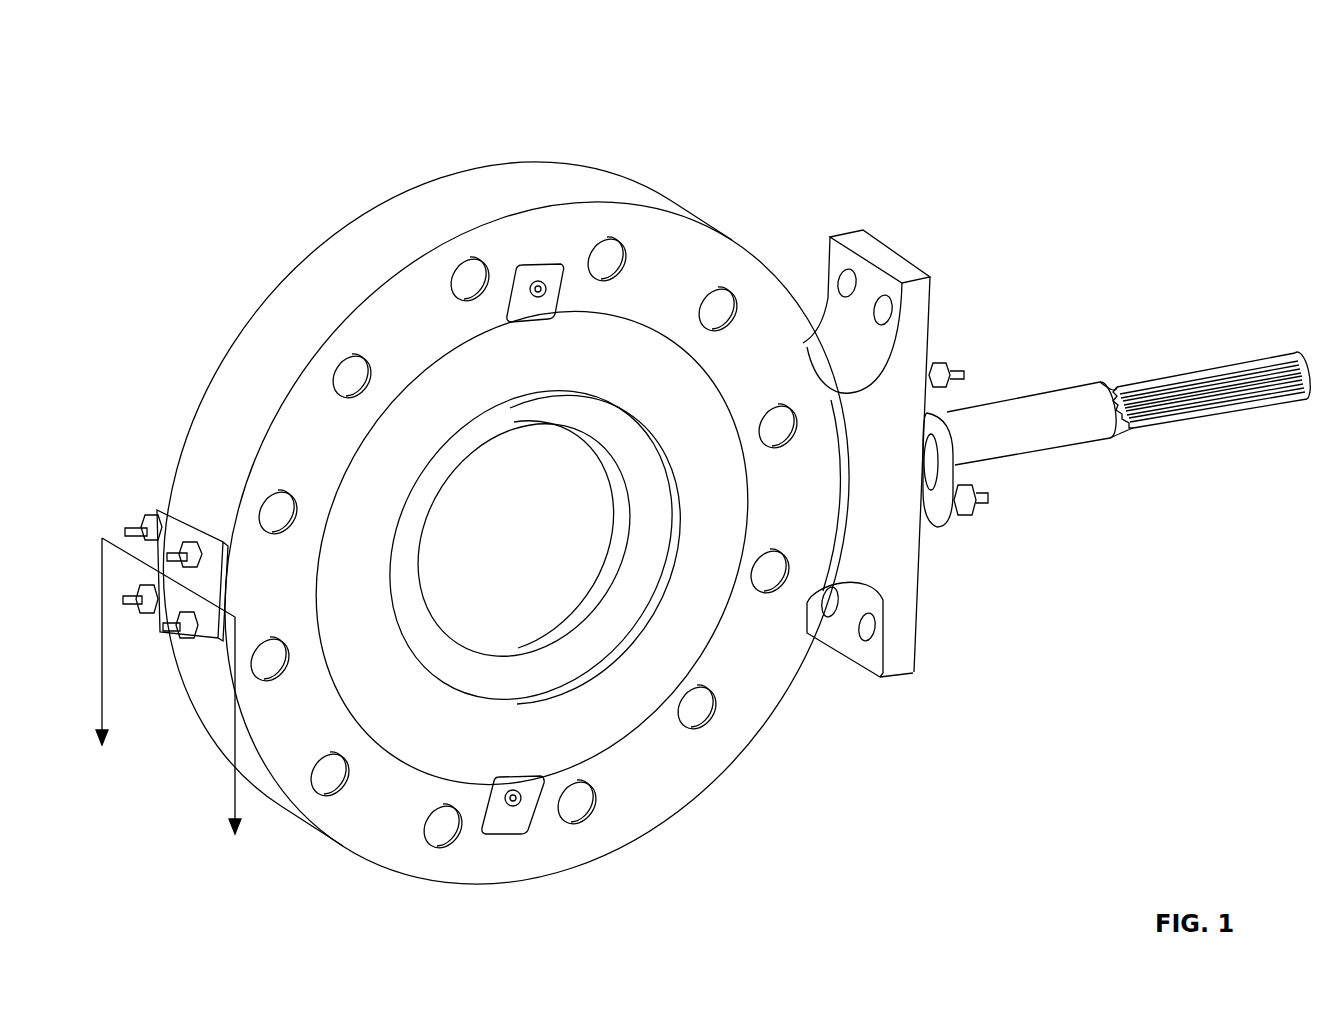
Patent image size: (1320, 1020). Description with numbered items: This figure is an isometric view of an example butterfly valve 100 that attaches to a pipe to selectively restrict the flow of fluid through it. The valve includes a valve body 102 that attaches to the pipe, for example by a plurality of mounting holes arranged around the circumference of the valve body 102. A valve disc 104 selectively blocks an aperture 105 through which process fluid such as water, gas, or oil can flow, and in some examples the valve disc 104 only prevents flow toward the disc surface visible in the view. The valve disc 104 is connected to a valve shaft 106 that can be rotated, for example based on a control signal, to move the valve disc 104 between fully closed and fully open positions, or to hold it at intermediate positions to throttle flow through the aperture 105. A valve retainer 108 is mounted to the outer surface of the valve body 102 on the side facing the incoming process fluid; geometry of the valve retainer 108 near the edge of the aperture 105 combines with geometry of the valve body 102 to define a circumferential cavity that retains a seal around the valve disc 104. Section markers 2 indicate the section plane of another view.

The butterfly valve 100 is at (1033, 50).
The valve body 102 is at (397, 228).
The valve disc 104 is at (560, 548).
The aperture 105 is at (583, 662).
The valve shaft 106 is at (1000, 397).
The valve retainer 108 is at (485, 377).
The section line for FIG. 2 is at (168, 701).